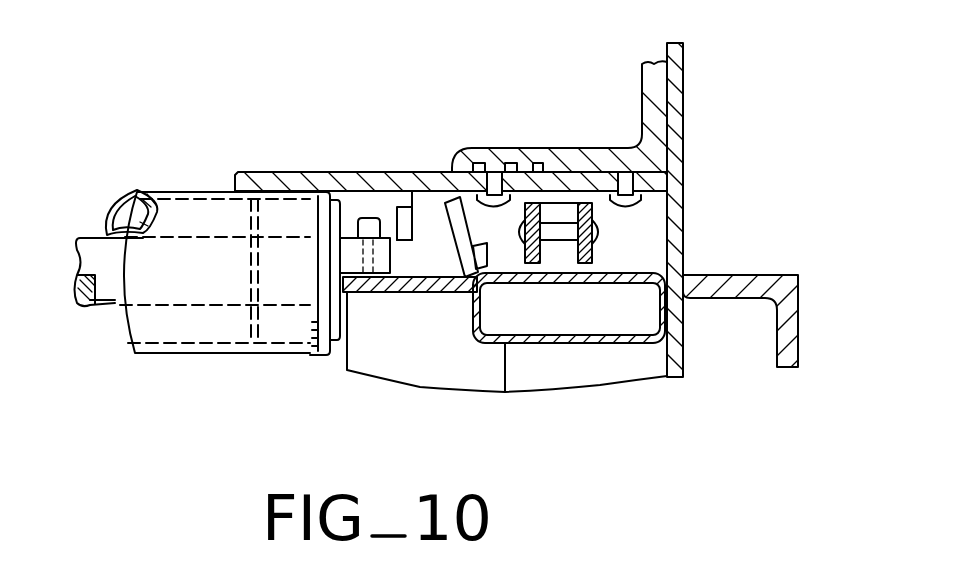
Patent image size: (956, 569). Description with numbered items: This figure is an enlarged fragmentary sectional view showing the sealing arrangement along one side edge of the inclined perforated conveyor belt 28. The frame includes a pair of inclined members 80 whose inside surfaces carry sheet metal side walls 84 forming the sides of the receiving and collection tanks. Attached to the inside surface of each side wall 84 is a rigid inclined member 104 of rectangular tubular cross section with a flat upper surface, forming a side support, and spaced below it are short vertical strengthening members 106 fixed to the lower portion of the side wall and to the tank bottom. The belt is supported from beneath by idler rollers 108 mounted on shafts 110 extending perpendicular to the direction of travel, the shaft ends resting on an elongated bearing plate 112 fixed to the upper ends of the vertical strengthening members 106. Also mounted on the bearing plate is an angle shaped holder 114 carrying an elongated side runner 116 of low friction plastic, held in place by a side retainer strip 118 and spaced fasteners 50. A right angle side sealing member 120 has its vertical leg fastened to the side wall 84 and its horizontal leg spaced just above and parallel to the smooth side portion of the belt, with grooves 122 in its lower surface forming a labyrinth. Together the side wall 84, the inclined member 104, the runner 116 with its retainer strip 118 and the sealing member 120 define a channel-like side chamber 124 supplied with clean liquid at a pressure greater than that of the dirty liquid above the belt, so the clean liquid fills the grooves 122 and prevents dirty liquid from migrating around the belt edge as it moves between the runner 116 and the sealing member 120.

The inclined perforated conveyor belt 28 is at (313, 168).
The fasteners 50 is at (640, 210).
The inclined members 80 is at (800, 337).
The side walls 84 is at (685, 110).
The rigid inclined member 104 is at (612, 347).
The vertical strengthening members 106 is at (452, 373).
The idler rollers 108 is at (322, 355).
The shafts 110 is at (92, 247).
The bearing plate 112 is at (415, 292).
The angle shaped holder 114 is at (432, 271).
The side runner 116 is at (420, 208).
The side retainer strip 118 is at (448, 200).
The side sealing members 120 is at (575, 147).
The grooves 122 is at (510, 163).
The side chamber 124 is at (653, 258).